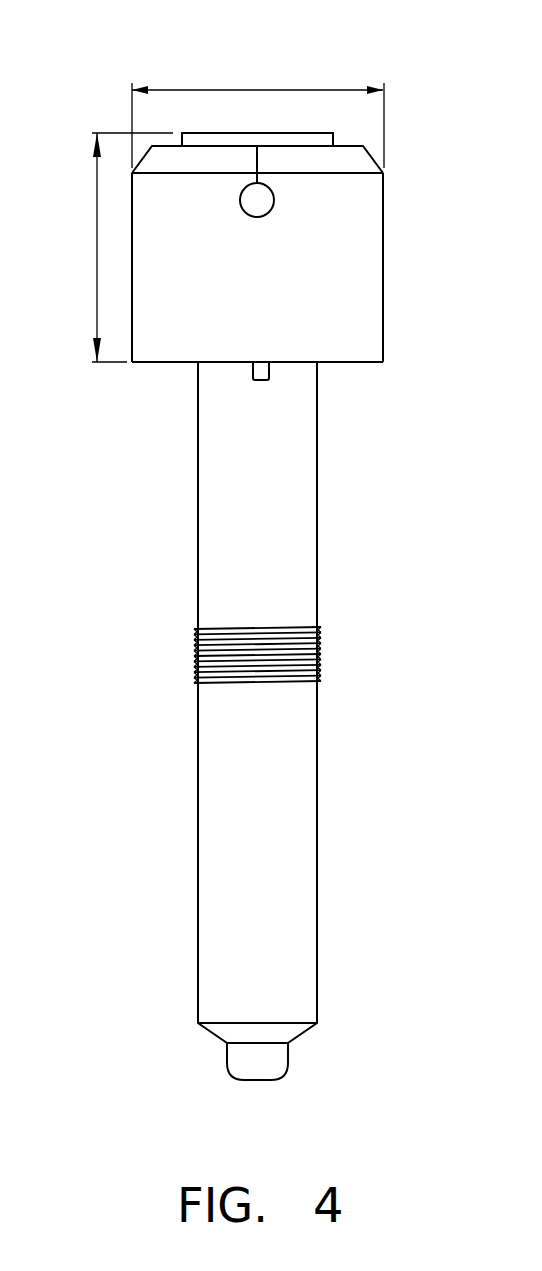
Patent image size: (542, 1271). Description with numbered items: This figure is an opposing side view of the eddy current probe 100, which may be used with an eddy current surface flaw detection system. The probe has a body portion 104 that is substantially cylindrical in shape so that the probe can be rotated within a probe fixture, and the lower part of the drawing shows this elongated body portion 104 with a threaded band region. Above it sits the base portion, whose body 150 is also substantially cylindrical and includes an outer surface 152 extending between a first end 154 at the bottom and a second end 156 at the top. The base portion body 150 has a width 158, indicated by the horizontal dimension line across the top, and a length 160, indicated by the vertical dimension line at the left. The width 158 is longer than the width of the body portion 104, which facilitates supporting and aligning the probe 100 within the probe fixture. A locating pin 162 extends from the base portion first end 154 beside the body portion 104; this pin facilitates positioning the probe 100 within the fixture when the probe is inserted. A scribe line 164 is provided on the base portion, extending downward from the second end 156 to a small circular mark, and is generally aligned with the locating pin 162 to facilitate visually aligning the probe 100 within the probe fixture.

The eddy current probe 100 is at (199, 47).
The body portion 104 is at (285, 528).
The base portion body 150 is at (353, 250).
The outer surface 152 is at (383, 312).
The first end 154 is at (362, 363).
The second end 156 is at (352, 145).
The width 158 is at (287, 90).
The length 160 is at (97, 247).
The locating pin 162 is at (267, 371).
The scribe line 164 is at (256, 160).